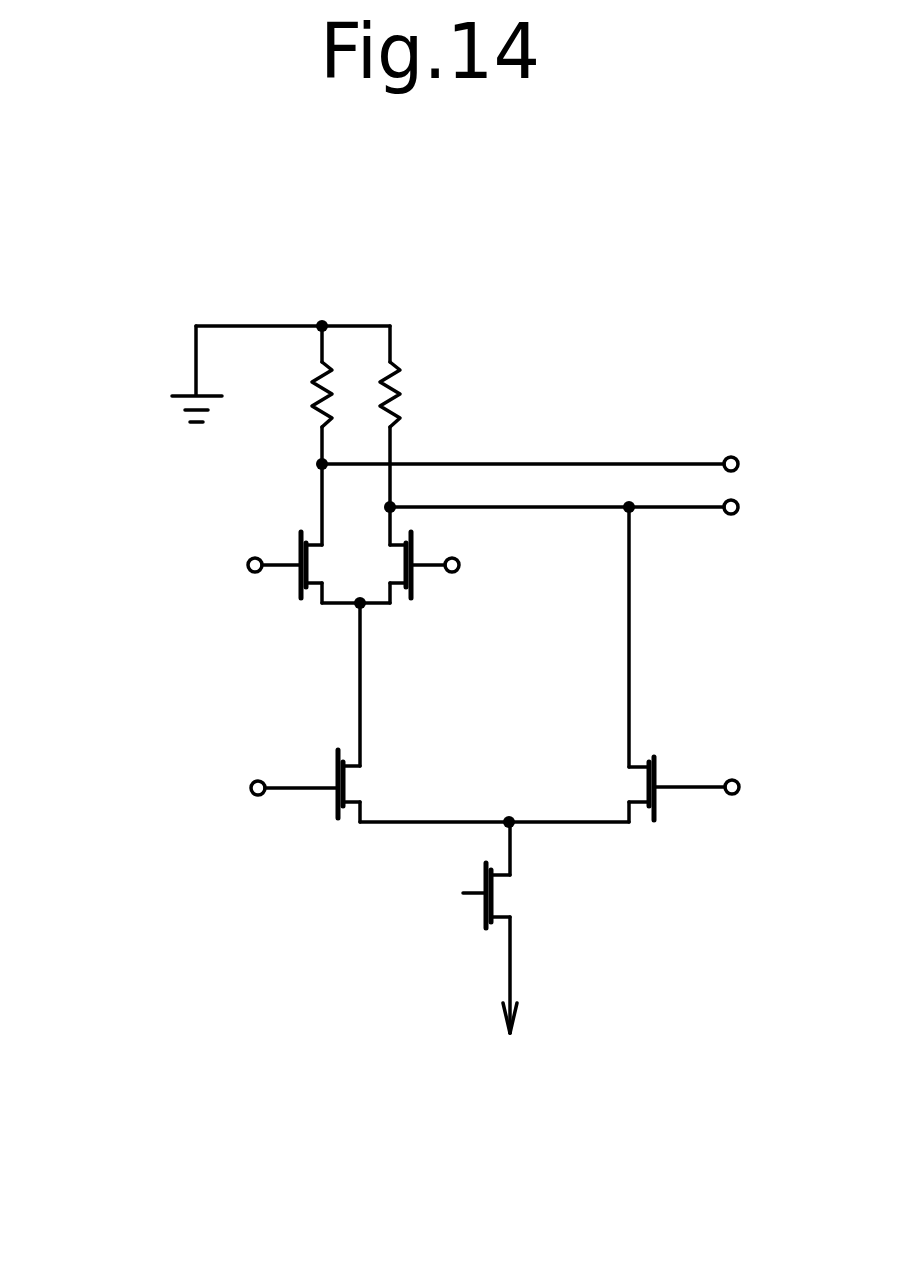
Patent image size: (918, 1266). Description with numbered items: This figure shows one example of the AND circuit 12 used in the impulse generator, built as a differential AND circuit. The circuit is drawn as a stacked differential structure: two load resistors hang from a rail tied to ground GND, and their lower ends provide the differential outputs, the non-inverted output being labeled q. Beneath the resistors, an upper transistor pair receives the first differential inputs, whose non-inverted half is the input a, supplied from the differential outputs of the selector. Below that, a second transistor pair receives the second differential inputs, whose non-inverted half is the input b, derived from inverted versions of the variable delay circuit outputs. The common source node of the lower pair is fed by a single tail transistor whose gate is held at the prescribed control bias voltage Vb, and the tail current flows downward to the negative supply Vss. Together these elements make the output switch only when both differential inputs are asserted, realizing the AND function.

The AND circuit 12 is at (583, 253).
The ground GND is at (142, 409).
The first differential input a is at (249, 561).
The second differential input b is at (273, 785).
The differential output q is at (606, 505).
The control bias voltage Vb is at (439, 893).
The negative supply Vss is at (519, 1017).